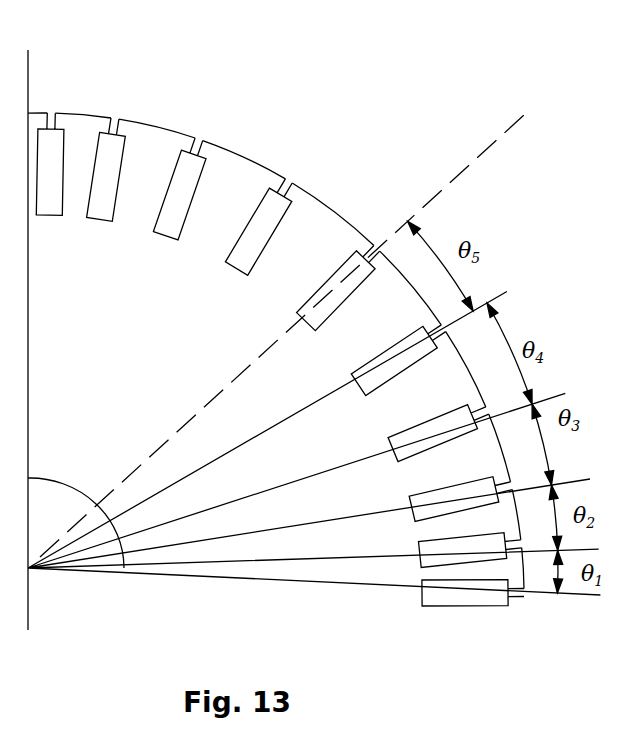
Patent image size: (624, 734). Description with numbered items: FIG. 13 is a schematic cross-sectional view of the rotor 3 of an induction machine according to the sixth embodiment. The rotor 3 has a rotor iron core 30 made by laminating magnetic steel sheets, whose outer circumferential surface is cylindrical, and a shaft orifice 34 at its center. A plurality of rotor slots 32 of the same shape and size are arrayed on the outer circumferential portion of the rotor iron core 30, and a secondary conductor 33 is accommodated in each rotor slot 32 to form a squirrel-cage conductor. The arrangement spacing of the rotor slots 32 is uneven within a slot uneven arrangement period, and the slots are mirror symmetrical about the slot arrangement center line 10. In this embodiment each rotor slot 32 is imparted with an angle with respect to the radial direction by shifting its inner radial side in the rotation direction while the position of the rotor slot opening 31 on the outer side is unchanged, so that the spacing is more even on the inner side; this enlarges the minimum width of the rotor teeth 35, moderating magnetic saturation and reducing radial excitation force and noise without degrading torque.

The rotor 3 is at (280, 311).
The slot arrangement center line 10 is at (472, 162).
The rotor iron core 30 is at (247, 160).
The rotor slot opening 31 is at (142, 183).
The rotor slot 32 is at (108, 150).
The secondary conductor 33 is at (107, 167).
The shaft orifice 34 is at (62, 482).
The rotor teeth 35 is at (79, 172).